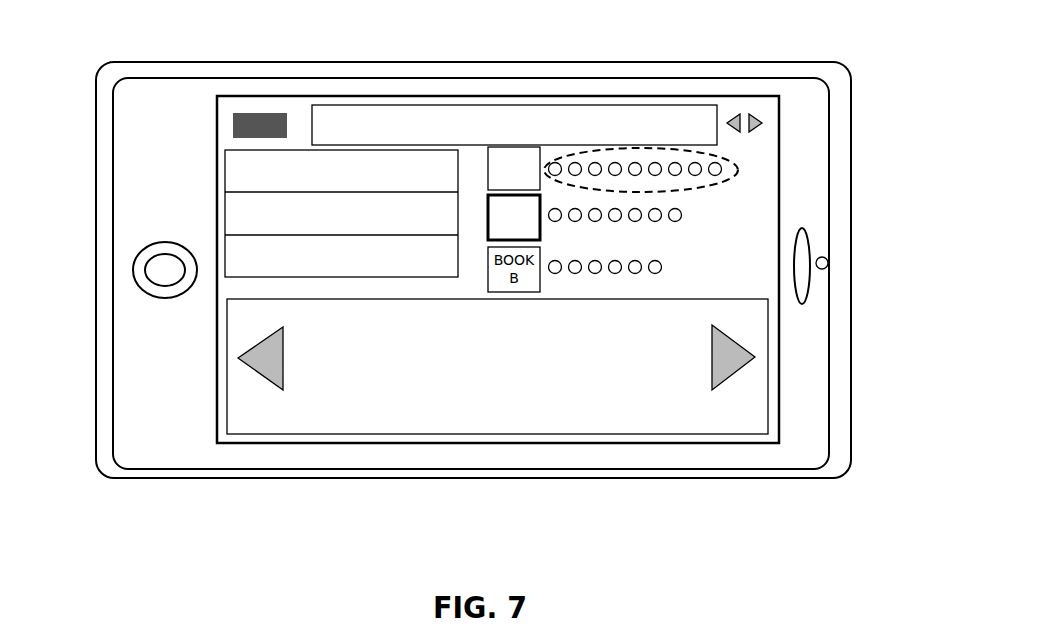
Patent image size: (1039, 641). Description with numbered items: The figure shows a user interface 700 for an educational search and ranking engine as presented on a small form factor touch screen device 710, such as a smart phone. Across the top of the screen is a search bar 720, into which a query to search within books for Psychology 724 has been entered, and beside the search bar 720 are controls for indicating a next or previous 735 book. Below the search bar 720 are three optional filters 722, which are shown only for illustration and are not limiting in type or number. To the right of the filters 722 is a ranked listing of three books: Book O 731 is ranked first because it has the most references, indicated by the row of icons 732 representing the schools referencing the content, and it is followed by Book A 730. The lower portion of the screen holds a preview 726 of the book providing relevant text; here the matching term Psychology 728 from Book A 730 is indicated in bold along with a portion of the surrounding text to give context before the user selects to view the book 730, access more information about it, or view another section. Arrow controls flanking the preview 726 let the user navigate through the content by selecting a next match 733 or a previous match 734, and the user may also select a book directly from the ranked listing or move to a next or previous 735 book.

The user interface 700 is at (217, 392).
The touch screen device 710 is at (96, 158).
The search bar 720 is at (718, 109).
The filters 722 is at (232, 232).
The query for Psychology 724 is at (605, 108).
The preview 726 is at (606, 434).
The matching term 728 is at (360, 348).
The Book A 730 is at (543, 218).
The Book O 731 is at (539, 173).
The icons 732 is at (740, 170).
The next match 733 is at (733, 375).
The previous match 734 is at (252, 365).
The next or previous book control 735 is at (780, 123).